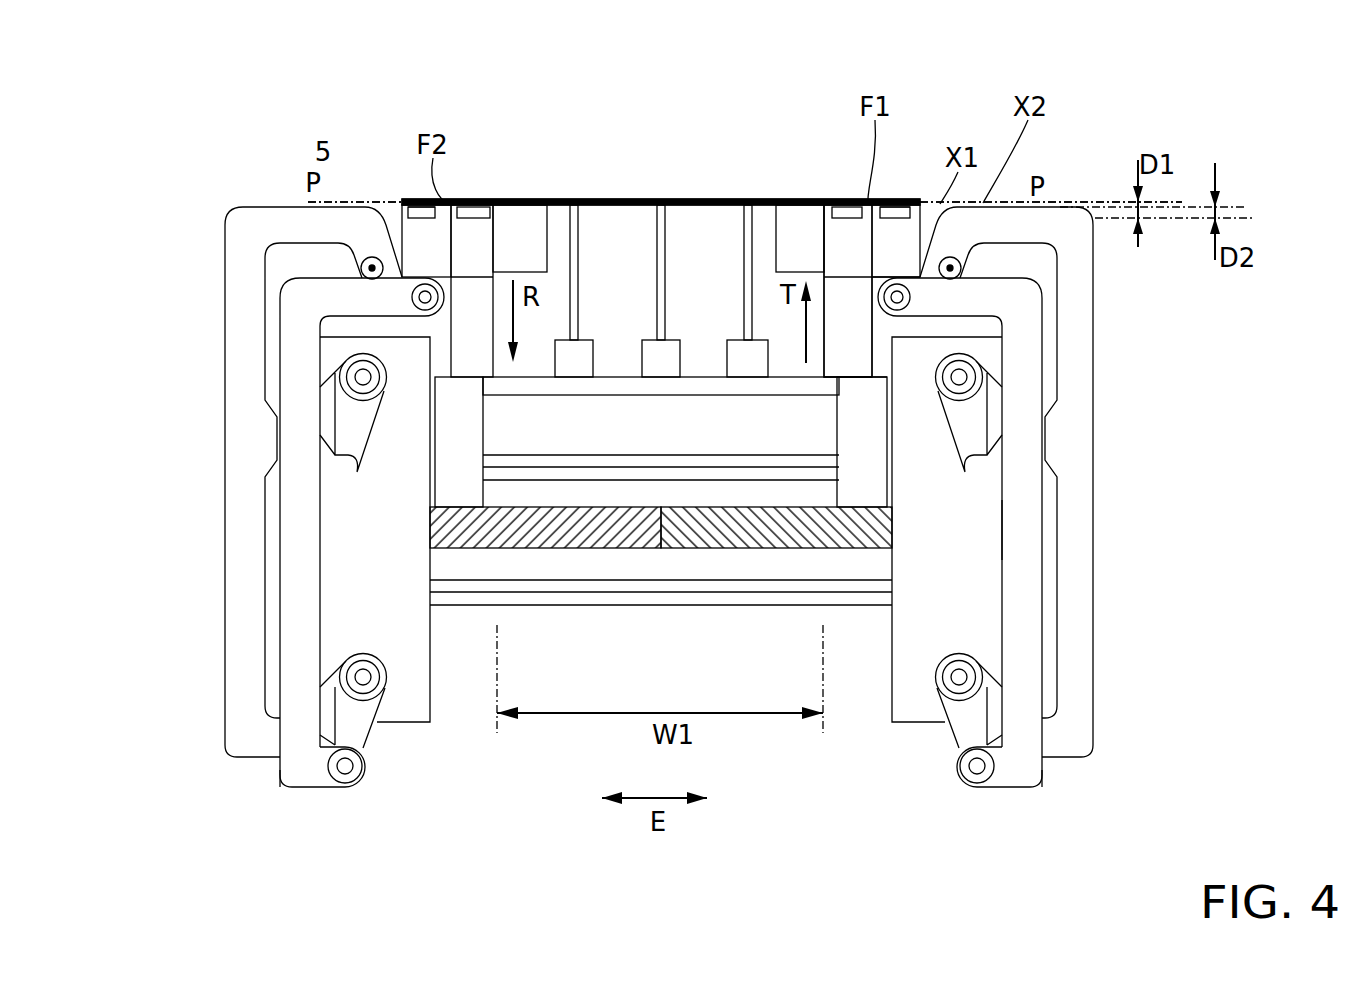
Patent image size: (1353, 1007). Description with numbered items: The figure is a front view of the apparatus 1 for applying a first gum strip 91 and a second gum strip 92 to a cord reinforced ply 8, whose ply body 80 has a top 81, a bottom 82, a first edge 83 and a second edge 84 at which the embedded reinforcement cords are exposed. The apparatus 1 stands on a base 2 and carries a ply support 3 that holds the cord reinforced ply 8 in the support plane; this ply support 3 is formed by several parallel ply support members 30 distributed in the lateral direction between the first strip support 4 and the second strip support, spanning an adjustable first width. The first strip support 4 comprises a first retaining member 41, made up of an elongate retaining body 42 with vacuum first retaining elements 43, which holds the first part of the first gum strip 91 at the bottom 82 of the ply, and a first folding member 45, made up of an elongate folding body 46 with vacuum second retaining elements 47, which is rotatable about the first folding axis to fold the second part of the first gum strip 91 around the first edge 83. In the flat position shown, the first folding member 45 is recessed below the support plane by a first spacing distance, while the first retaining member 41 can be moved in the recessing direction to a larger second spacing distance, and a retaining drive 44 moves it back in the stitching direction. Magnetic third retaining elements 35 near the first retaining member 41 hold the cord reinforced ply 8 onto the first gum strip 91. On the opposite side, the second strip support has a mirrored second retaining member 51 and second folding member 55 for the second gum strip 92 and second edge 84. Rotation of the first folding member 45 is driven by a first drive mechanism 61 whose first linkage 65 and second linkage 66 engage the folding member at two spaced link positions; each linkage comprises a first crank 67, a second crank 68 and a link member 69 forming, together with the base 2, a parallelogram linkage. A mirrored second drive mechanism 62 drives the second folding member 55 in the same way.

The apparatus 1 is at (186, 138).
The base 2 is at (412, 712).
The ply support 3 is at (645, 355).
The first strip support 4 is at (948, 202).
The cord reinforced ply 8 is at (563, 200).
The ply body 80 is at (661, 202).
The ply support members 30 is at (750, 240).
The third retaining elements 35 is at (524, 230).
The first retaining member 41 is at (830, 240).
The retaining body 42 is at (880, 255).
The first retaining elements 43 is at (840, 225).
The retaining drive 44 is at (837, 360).
The first folding member 45 is at (912, 235).
The folding body 46 is at (890, 262).
The second retaining elements 47 is at (903, 230).
The second retaining member 51 is at (472, 203).
The second folding member 55 is at (412, 203).
The first drive mechanism 61 is at (1022, 587).
The second drive mechanism 62 is at (228, 575).
The first linkage 65 is at (292, 774).
The second linkage 66 is at (238, 348).
The first crank 67 is at (358, 740).
The second crank 68 is at (362, 425).
The link member 69 is at (240, 462).
The top 81 is at (578, 245).
The bottom 82 is at (660, 240).
The first edge 83 is at (845, 215).
The second edge 84 is at (450, 203).
The first gum strip 91 is at (890, 240).
The second gum strip 92 is at (418, 203).